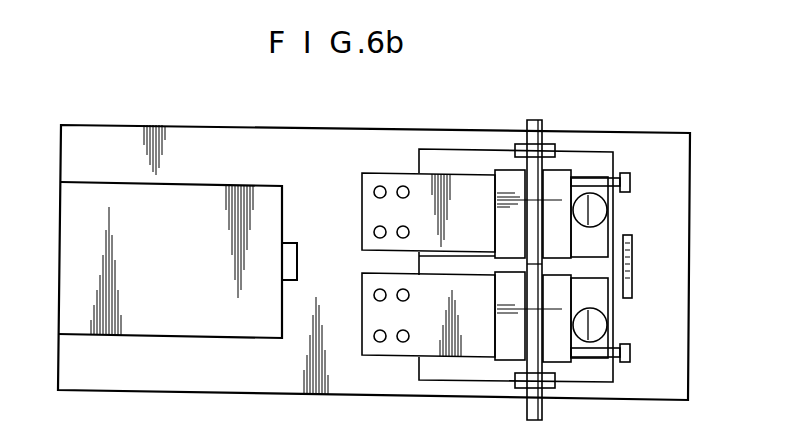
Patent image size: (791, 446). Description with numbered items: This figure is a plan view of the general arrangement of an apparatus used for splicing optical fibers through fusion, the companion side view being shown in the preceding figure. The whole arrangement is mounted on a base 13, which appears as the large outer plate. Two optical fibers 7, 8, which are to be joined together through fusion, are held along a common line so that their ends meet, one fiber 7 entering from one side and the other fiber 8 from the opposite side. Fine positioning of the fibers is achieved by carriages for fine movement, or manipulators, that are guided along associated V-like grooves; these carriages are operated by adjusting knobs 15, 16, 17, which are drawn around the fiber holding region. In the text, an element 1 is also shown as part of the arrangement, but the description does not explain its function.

The body 1 is at (200, 333).
The optical fiber 7 is at (527, 409).
The optical fiber 8 is at (527, 127).
The base 13 is at (274, 392).
The adjusting knob 15 is at (548, 148).
The adjusting knob 16 is at (631, 182).
The adjusting knob 17 is at (608, 211).